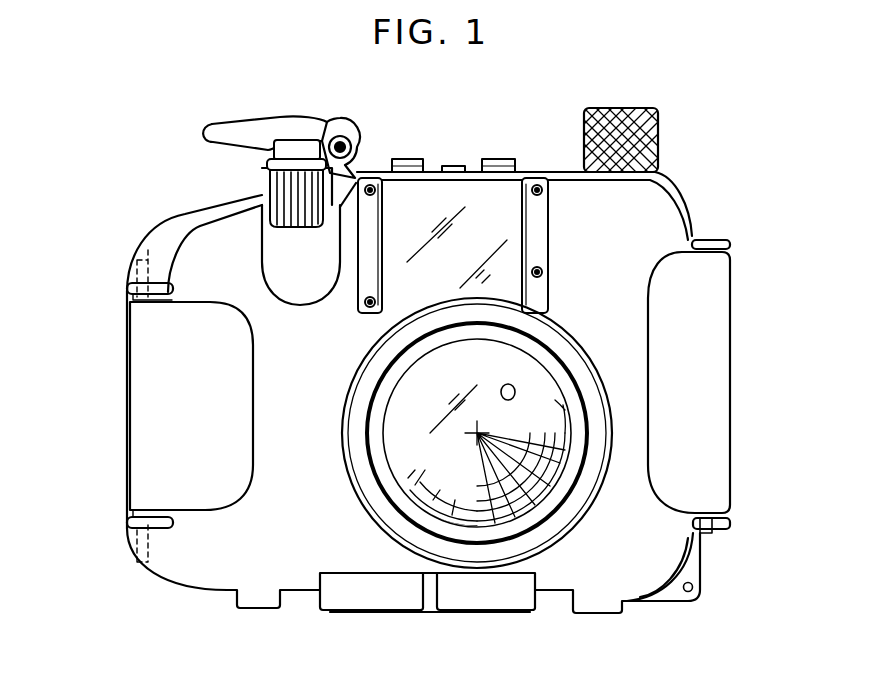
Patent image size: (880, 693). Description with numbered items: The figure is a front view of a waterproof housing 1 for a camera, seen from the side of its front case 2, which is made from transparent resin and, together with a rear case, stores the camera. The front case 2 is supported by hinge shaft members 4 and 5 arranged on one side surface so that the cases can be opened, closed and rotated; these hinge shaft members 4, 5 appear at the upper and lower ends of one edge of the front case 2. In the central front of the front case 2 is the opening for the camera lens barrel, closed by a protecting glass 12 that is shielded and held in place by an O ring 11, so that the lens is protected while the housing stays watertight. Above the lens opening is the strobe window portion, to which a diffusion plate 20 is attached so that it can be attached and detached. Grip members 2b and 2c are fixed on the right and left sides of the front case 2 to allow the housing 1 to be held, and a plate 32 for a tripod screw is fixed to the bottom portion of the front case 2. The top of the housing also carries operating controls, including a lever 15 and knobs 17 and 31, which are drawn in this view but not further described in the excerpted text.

The waterproof housing 1 is at (100, 310).
The front case 2 is at (180, 557).
The left grip 2b is at (127, 430).
The grip member 2c is at (730, 446).
The hinge shaft member 4 is at (126, 262).
The hinge shaft member 5 is at (128, 535).
The O ring 11 is at (583, 517).
The protecting glass 12 is at (468, 480).
The locking lever 15 is at (333, 120).
The operation knob 17 is at (262, 190).
The diffusion plate 20 is at (471, 223).
The operation knob 31 is at (620, 107).
The plate for tripod screw 32 is at (380, 613).